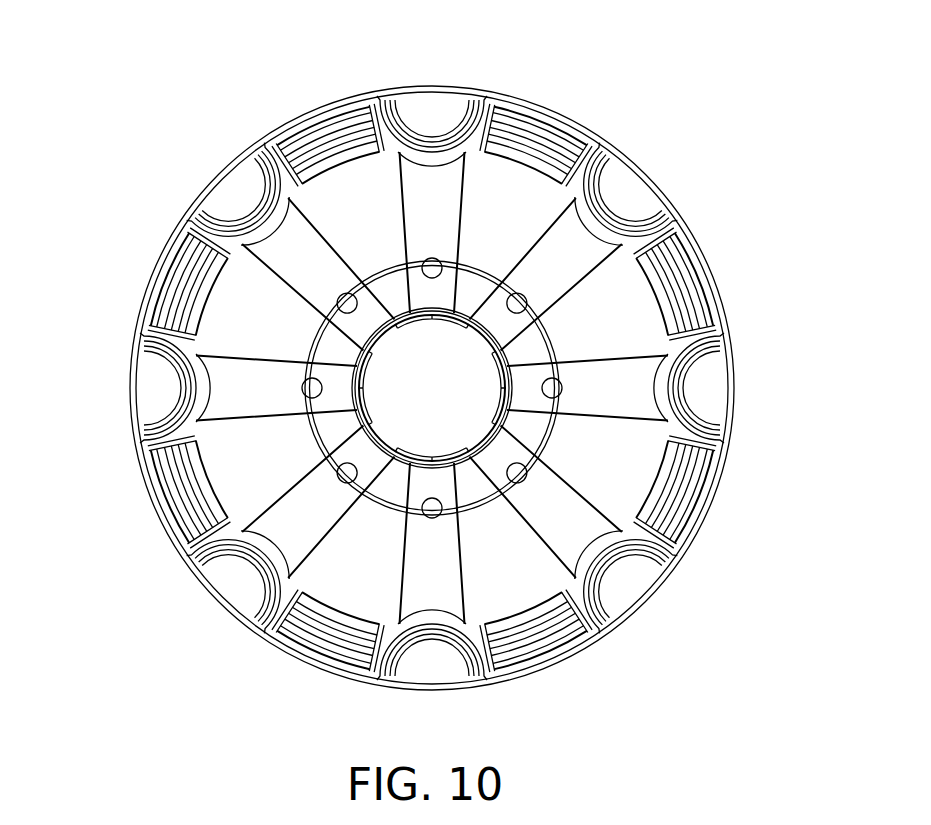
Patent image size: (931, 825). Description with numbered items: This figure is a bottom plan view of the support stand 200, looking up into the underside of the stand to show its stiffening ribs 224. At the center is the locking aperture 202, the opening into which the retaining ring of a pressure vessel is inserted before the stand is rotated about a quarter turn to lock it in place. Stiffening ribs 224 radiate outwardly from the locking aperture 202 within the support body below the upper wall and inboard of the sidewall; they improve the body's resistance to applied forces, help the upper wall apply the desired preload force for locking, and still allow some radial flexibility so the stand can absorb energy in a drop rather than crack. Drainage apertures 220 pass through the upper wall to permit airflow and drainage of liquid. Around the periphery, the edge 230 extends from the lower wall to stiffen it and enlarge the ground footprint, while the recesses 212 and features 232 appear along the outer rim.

The support stand 200 is at (657, 136).
The locking aperture 202 is at (456, 375).
The peripheral pockets 212 is at (328, 138).
The drainage apertures 220 is at (556, 393).
The stiffening ribs 224 is at (544, 235).
The edge 230 is at (470, 97).
The notch floor 232 is at (428, 152).